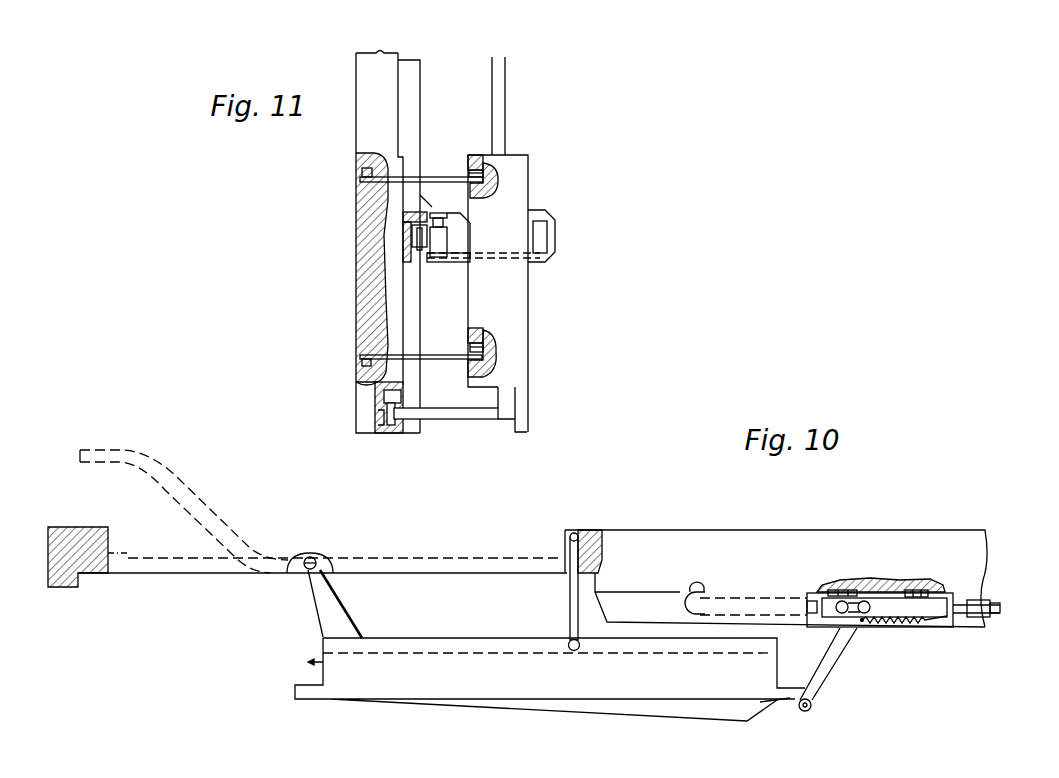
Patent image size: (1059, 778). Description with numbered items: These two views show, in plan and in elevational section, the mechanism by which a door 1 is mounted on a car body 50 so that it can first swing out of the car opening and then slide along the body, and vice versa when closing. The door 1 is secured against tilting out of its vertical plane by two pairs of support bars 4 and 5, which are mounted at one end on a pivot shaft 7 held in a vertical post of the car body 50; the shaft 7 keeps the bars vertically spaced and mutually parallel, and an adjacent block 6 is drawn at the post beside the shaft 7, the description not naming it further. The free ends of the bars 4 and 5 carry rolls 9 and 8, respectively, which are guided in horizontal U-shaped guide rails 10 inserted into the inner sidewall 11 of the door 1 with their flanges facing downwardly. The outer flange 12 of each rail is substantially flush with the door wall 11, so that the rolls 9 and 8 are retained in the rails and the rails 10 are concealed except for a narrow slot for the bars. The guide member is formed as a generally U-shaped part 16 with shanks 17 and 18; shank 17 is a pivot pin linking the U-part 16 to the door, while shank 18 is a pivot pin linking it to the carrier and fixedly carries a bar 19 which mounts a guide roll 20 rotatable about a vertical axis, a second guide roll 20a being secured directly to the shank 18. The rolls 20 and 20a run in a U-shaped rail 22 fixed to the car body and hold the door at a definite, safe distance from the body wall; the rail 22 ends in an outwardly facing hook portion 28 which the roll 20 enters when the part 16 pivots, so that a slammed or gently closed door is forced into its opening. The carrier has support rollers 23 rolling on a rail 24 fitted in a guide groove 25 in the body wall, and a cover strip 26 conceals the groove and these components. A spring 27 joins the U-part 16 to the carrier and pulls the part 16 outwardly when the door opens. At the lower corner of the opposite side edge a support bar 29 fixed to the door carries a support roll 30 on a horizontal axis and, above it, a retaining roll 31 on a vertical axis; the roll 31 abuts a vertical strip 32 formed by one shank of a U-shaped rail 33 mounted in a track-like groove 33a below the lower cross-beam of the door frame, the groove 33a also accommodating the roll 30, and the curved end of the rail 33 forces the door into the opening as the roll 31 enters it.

In FIG. 11, the door 1 is at (515, 368).
In FIG. 10, the door 1 is at (350, 682).
In FIG. 11, the support bar 4 is at (443, 178).
In FIG. 10, the support bar 4 is at (573, 606).
In FIG. 11, the support bar 5 is at (447, 350).
In FIG. 10, the block 6 is at (595, 533).
In FIG. 11, the pivot shaft 7 is at (366, 192).
In FIG. 10, the pivot shaft 7 is at (572, 536).
In FIG. 11, the roll 8 is at (486, 346).
In FIG. 11, the roll 9 is at (490, 170).
In FIG. 11, the guide rail 10 is at (473, 160).
In FIG. 11, the inner sidewall 11 is at (467, 317).
In FIG. 11, the outer flange 12 is at (472, 174).
In FIG. 11, the U-shaped part 16 is at (546, 263).
In FIG. 10, the U-shaped part 16 is at (840, 651).
In FIG. 10, the shank 17 is at (820, 705).
In FIG. 11, the shank 18 is at (449, 247).
In FIG. 10, the bar 19 is at (858, 603).
In FIG. 10, the guide roll 20 is at (838, 604).
In FIG. 10, the second guide roll 20a is at (873, 603).
In FIG. 11, the rail 22 is at (428, 207).
In FIG. 10, the rail 22 is at (1000, 607).
In FIG. 11, the support rollers 23 is at (403, 238).
In FIG. 10, the support rollers 23 is at (830, 590).
In FIG. 11, the rail 24 is at (421, 251).
In FIG. 11, the guide groove 25 is at (404, 222).
In FIG. 11, the cover strip 26 is at (460, 224).
In FIG. 10, the cover strip 26 is at (980, 623).
In FIG. 10, the spring 27 is at (917, 621).
In FIG. 10, the hook portion 28 is at (690, 583).
In FIG. 11, the support bar 29 is at (493, 416).
In FIG. 10, the support bar 29 is at (317, 603).
In FIG. 11, the support roll 30 is at (398, 420).
In FIG. 11, the guide or retaining roll 31 is at (378, 401).
In FIG. 11, the vertical strip 32 is at (412, 390).
In FIG. 11, the rail 33 is at (362, 383).
In FIG. 10, the rail 33 is at (206, 514).
In FIG. 11, the track-like groove 33a is at (378, 418).
In FIG. 11, the car body 50 is at (372, 72).
In FIG. 10, the car body 50 is at (60, 590).